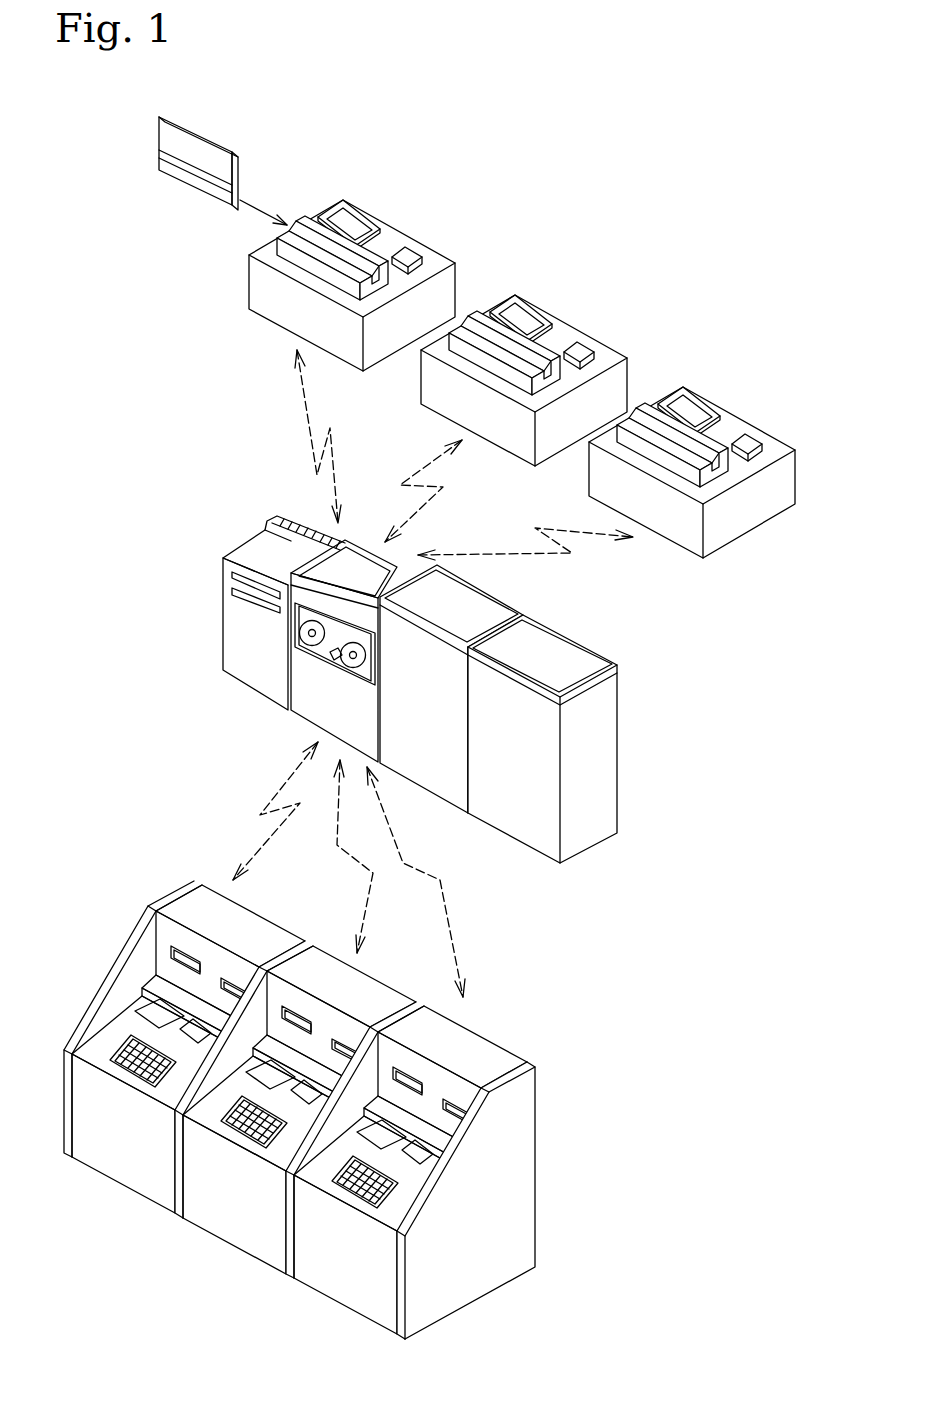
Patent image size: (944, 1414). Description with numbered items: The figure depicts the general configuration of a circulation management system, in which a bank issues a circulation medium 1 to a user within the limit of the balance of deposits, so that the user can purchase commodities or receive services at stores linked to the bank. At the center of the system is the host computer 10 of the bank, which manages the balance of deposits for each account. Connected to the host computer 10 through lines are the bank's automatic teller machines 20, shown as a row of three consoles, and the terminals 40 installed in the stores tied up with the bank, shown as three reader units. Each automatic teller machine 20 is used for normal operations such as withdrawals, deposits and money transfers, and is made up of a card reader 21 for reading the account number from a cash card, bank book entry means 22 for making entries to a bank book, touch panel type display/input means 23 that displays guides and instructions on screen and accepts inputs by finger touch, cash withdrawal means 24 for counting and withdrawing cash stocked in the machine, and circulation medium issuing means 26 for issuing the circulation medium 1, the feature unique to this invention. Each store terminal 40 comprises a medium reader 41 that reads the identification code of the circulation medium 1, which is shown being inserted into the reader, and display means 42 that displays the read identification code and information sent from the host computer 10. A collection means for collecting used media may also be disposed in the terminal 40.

The circulation medium 1 is at (232, 153).
The host computer 10 is at (627, 708).
The automatic teller machine 20 is at (321, 1058).
The card reader 21 is at (222, 977).
The bank book entry means 22 is at (173, 960).
The touch panel type display/input means 23 is at (142, 1050).
The cash withdrawal means 24 is at (195, 1037).
The circulation medium issuing means 26 is at (158, 1012).
The terminal 40 is at (476, 347).
The medium reader 41 is at (330, 278).
The display means 42 is at (346, 227).